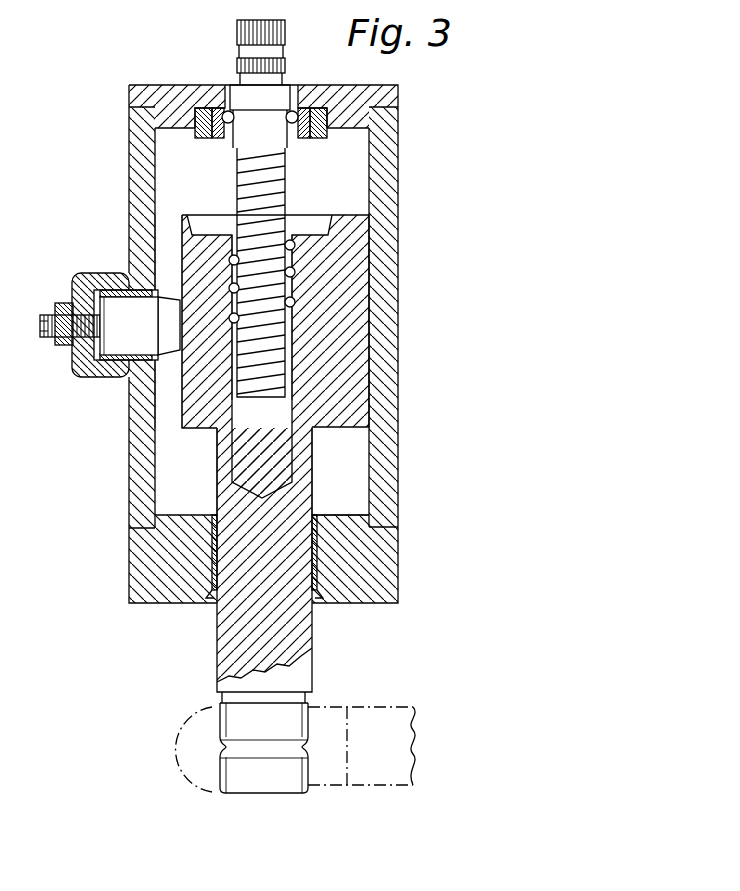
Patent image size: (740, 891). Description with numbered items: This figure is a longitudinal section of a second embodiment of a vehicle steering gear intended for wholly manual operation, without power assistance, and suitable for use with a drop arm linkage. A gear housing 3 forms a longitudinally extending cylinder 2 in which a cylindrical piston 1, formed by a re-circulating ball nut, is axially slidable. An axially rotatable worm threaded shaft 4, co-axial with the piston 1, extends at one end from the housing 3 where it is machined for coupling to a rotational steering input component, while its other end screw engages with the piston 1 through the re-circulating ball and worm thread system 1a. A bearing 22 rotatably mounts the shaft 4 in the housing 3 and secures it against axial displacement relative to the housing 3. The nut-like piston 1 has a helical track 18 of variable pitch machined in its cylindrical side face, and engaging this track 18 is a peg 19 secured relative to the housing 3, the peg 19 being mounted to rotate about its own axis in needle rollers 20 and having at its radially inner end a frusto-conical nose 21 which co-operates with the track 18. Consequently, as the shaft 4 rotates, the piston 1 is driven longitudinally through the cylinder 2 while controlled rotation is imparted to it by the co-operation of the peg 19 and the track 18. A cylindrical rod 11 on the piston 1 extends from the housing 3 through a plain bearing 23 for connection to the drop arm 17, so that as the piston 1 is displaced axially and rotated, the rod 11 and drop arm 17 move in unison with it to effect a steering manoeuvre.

The piston 1 is at (355, 346).
The re-circulating ball and worm thread system 1a is at (302, 286).
The cylinder 2 is at (365, 470).
The gear housing 3 is at (138, 176).
The worm threaded shaft 4 is at (262, 150).
The cylindrical rod 11 is at (236, 642).
The drop arm 17 is at (338, 706).
The helical track 18 is at (165, 412).
The peg 19 is at (121, 346).
The needle rollers 20 is at (117, 290).
The frusto-conical nose 21 is at (172, 346).
The bearing 22 is at (212, 142).
The plain bearing 23 is at (212, 563).